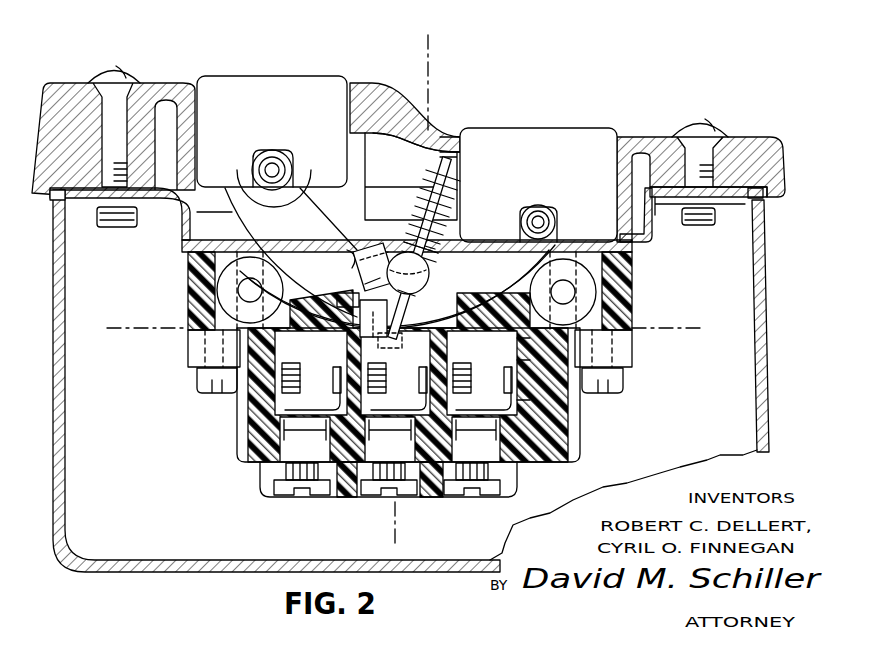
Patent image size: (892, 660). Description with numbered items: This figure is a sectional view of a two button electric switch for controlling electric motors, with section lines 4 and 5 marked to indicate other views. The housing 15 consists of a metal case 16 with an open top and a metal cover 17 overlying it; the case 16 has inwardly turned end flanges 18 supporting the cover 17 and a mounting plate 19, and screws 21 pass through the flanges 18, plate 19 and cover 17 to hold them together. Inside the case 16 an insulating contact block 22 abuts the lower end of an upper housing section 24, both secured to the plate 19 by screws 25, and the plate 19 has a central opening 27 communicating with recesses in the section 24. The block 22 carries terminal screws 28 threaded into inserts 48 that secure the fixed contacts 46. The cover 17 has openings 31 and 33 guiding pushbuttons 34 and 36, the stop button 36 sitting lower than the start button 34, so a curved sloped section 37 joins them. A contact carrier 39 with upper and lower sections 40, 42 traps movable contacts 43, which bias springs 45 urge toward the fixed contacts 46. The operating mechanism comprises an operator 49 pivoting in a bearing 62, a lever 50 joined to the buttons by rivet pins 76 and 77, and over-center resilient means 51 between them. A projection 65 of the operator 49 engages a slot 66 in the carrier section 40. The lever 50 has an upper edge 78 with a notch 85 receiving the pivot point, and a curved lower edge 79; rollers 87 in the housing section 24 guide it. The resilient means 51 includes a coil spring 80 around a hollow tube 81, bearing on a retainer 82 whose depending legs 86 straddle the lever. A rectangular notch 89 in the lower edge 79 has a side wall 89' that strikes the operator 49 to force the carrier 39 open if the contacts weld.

The housing 15 is at (642, 135).
The case 16 is at (769, 367).
The cover 17 is at (372, 85).
The end flanges 18 is at (82, 220).
The mounting plate 19 is at (650, 215).
The screws 21 is at (122, 70).
The contact block 22 is at (580, 440).
The upper housing section 24 is at (633, 267).
The screws 25 is at (198, 385).
The central opening 27 is at (348, 250).
The terminal screws 28 is at (288, 495).
The opening 31 is at (176, 222).
The opening 33 is at (458, 145).
The pushbutton 34 is at (296, 76).
The pushbutton 36 is at (515, 128).
The curved sloped section 37 is at (405, 124).
The contact carrier 39 is at (518, 363).
The upper section 40 is at (517, 342).
The lower section 42 is at (517, 401).
The movable contacts 43 is at (293, 363).
The bias springs 45 is at (288, 408).
The fixed contacts 46 is at (336, 375).
The inserts 48 is at (326, 442).
The operator 49 is at (433, 247).
The lever 50 is at (232, 212).
The over-center resilient means 51 is at (403, 168).
The bearing 62 is at (430, 270).
The projection 65 is at (394, 342).
The slot 66 is at (373, 318).
The rivet pin 76 is at (283, 160).
The rivet pin 77 is at (546, 215).
The upper edge 78 is at (313, 216).
The curved lower edge 79 is at (452, 316).
The coil spring 80 is at (405, 181).
The hollow tube 81 is at (392, 207).
The retainer 82 is at (355, 262).
The notch 85 is at (355, 270).
The depending legs 86 is at (365, 284).
The rollers 87 is at (212, 282).
The notch 89 is at (336, 291).
The side wall 89' is at (422, 300).
The section line 4- 4 is at (120, 326).
The section line 5- 5 is at (431, 43).